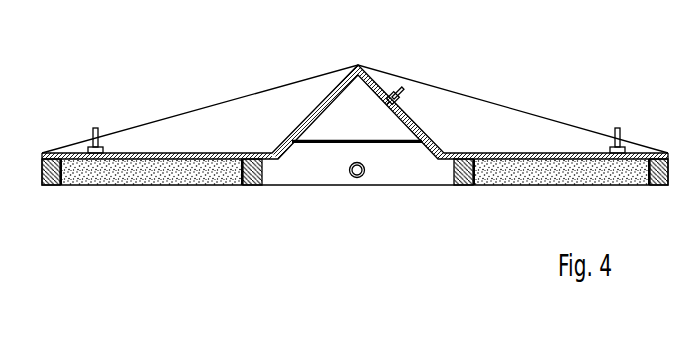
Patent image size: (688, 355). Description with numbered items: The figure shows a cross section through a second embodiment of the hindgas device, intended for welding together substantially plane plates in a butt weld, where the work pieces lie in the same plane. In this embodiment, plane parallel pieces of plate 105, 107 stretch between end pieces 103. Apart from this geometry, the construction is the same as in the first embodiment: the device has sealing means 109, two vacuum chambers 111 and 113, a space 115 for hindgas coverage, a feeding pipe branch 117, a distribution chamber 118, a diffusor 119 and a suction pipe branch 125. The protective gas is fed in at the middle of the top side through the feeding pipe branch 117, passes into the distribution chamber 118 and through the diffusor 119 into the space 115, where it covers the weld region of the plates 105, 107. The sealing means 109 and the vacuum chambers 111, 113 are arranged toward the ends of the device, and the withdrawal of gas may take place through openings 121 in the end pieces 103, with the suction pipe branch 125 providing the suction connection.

The end piece 103 is at (148, 138).
The plate 105 is at (320, 103).
The plate 107 is at (197, 152).
The sealing means 109 is at (253, 186).
The vacuum chamber 111 is at (523, 194).
The vacuum chamber 113 is at (152, 194).
The space for hindgas coverage 115 is at (417, 171).
The feeding pipe branch 117 is at (402, 90).
The distribution chamber 118 is at (313, 132).
The diffusor 119 is at (337, 144).
The opening 121 is at (355, 178).
The suction pipe branch 125 is at (95, 127).